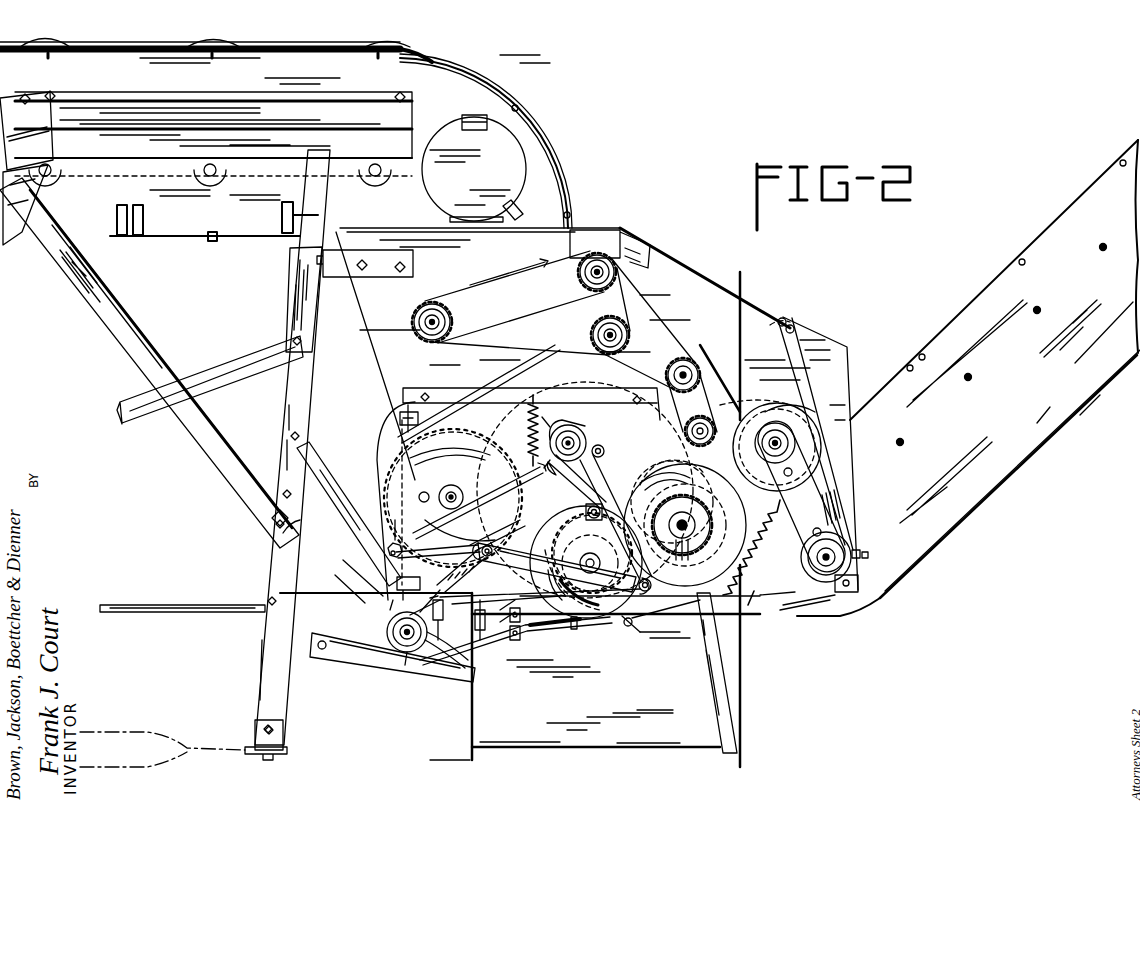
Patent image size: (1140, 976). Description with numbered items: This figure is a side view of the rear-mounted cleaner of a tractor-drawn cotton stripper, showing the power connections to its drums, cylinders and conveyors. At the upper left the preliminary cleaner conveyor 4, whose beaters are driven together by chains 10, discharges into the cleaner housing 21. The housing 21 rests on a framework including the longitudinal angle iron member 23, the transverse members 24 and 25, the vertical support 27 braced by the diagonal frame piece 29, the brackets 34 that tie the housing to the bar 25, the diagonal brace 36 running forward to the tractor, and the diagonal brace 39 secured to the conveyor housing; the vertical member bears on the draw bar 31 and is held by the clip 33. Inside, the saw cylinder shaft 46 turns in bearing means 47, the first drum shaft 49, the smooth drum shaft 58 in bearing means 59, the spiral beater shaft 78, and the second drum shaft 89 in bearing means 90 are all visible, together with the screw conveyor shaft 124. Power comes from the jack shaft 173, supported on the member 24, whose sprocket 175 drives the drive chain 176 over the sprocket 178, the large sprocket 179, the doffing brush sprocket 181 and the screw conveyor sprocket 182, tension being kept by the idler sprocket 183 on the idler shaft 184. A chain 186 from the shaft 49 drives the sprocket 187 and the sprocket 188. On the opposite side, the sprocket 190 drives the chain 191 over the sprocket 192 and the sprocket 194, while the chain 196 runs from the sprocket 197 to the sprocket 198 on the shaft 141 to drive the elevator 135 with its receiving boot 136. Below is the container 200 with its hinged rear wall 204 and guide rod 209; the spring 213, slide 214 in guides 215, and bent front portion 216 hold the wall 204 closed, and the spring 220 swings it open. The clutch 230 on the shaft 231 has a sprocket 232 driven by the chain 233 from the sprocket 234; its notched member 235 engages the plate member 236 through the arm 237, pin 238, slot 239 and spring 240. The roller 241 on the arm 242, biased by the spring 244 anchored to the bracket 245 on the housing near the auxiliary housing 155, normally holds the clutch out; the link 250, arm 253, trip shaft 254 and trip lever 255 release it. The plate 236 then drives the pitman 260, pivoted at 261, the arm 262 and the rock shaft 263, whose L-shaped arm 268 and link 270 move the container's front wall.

The preliminary cleaner conveyor 4 is at (488, 80).
The chains 10 is at (110, 178).
The housing 21 is at (702, 295).
The longitudinal angle iron member 23 is at (305, 622).
The transverse angle iron member 24 is at (370, 585).
The transverse angle member 25 is at (295, 258).
The vertical angle iron support 27 is at (283, 402).
The diagonal frame piece 29 is at (352, 540).
The draw bar 31 is at (155, 748).
The clip 33 is at (258, 726).
The brackets 34 is at (322, 268).
The diagonal brace 36 is at (200, 372).
The diagonal brace 39 is at (165, 320).
The shaft 46 is at (578, 430).
The bearing means 47 is at (611, 443).
The shaft 49 is at (636, 318).
The shaft 58 is at (596, 255).
The bearing means 59 is at (676, 352).
The shaft 78 is at (412, 326).
The shaft 89 is at (455, 487).
The bearing means 90 is at (453, 498).
The shaft 124 is at (838, 420).
The elevator 135 is at (1043, 437).
The receiving boot 136 is at (818, 612).
The shaft 141 is at (840, 560).
The auxiliary housing 155 is at (395, 428).
The jack shaft 173 is at (395, 655).
The sprocket 175 is at (440, 665).
The drive chain 176 is at (479, 394).
The sprocket 178 is at (622, 312).
The sprocket 179 is at (531, 393).
The sprocket 181 is at (700, 340).
The sprocket 182 is at (738, 600).
The idler sprocket 183 is at (688, 418).
The idler shaft 184 is at (735, 410).
The chain 186 is at (530, 273).
The sprocket 187 is at (453, 324).
The sprocket 188 is at (597, 286).
The sprocket 190 is at (705, 492).
The chain 191 is at (714, 512).
The sprocket 192 is at (670, 464).
The sprocket 194 is at (758, 396).
The chain 196 is at (845, 482).
The sprocket 197 is at (798, 441).
The sprocket 198 is at (860, 556).
The container 200 is at (556, 745).
The rear wall 204 is at (738, 720).
The guide rod 209 is at (200, 614).
The spring 213 is at (578, 632).
The slide 214 is at (472, 632).
The guides 215 is at (518, 614).
The front portion 216 is at (481, 630).
The spring 220 is at (779, 555).
The clutch 230 is at (529, 637).
The shaft 231 is at (516, 641).
The sprocket 232 is at (497, 535).
The chain 233 is at (616, 513).
The sprocket 234 is at (553, 435).
The notched member 235 is at (540, 592).
The plate member 236 is at (600, 620).
The arm 237 is at (661, 576).
The pin 238 is at (594, 562).
The slot 239 is at (581, 571).
The spring 240 is at (598, 649).
The roller 241 is at (596, 498).
The arm 242 is at (576, 481).
The spring 244 is at (525, 418).
The bracket 245 is at (532, 395).
The link 250 is at (479, 501).
The arm 253 is at (434, 548).
The trip shaft 254 is at (400, 502).
The trip lever 255 is at (282, 538).
The pitman 260 is at (561, 568).
The pivotal connection 261 is at (661, 615).
The arm 262 is at (464, 564).
The rock shaft 263 is at (421, 583).
The L-shaped arm 268 is at (338, 648).
The link 270 is at (424, 668).